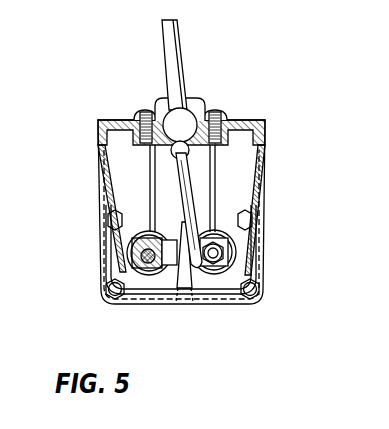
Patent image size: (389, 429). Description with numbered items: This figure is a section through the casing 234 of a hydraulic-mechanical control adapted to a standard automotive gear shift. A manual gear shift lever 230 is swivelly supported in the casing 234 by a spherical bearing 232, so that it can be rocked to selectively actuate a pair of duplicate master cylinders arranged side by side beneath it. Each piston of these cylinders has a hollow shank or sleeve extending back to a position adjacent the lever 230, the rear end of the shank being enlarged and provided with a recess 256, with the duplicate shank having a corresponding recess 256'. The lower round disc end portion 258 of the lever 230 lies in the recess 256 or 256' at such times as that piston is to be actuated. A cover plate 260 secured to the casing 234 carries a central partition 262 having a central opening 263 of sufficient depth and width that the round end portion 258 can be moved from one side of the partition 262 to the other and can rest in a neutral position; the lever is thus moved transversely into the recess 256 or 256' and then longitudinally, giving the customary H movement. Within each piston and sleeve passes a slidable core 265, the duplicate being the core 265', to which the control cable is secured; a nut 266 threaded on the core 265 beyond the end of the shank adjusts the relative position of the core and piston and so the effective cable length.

The manual gear shift lever 230 is at (172, 43).
The spherical bearing 232 is at (173, 125).
The casing 234 is at (242, 119).
The cover plate 260 is at (100, 167).
The central partition 262 is at (185, 235).
The round disc end portion 258 is at (287, 214).
The slidable core 265 is at (261, 263).
The slidable core 265' is at (105, 267).
The nut 266 is at (222, 251).
The recess 256 is at (221, 289).
The recess 256' is at (135, 290).
The central opening 263 is at (178, 296).